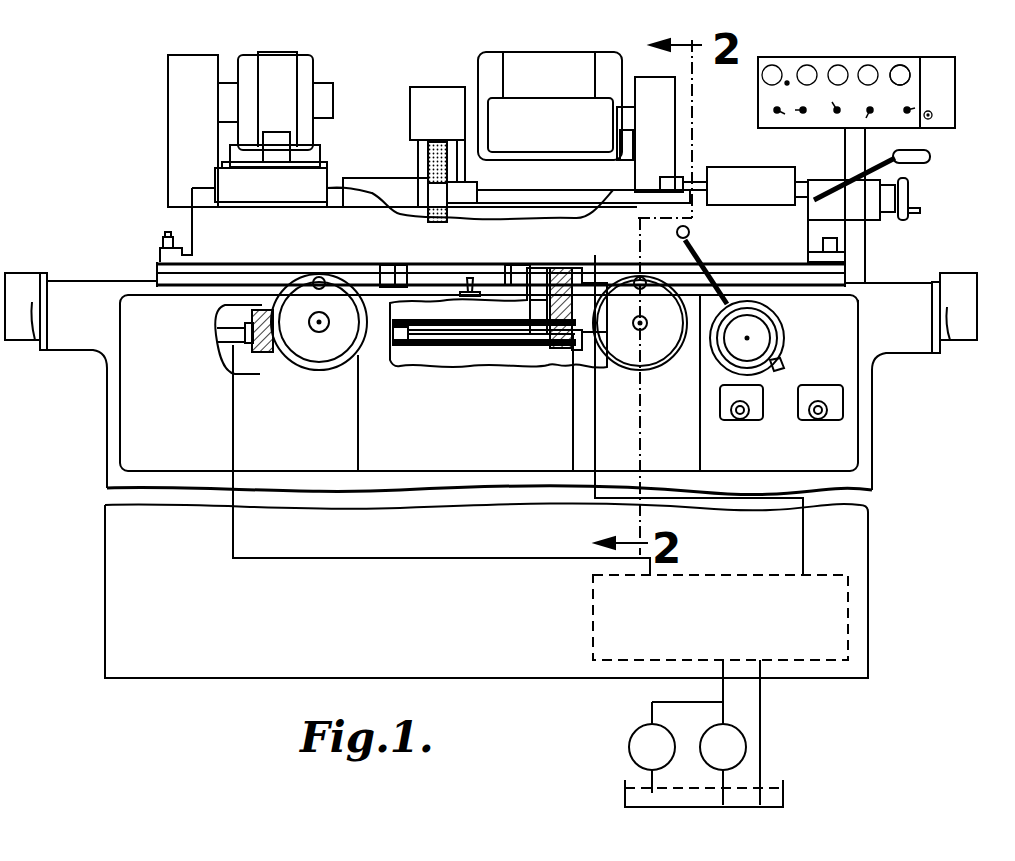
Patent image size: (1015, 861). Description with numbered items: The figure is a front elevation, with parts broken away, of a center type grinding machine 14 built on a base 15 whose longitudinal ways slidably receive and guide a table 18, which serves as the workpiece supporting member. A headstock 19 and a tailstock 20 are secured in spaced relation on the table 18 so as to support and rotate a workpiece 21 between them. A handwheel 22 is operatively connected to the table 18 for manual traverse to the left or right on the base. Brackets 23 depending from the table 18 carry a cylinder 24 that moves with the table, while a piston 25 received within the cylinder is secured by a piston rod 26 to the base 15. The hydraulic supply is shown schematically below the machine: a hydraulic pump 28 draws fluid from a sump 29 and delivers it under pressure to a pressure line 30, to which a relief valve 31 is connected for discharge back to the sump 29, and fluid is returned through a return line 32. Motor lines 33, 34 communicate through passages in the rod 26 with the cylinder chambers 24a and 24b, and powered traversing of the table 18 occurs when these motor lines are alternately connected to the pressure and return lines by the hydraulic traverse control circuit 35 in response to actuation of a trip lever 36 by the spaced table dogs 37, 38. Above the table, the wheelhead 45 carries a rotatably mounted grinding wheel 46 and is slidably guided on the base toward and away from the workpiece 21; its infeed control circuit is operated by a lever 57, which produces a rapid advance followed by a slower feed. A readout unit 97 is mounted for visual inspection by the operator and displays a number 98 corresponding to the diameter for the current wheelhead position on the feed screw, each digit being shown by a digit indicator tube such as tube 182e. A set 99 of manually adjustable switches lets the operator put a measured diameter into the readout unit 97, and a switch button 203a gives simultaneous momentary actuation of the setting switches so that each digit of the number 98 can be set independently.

The center type grinding machine 14 is at (104, 487).
The base 15 is at (872, 490).
The table 18 is at (155, 262).
The headstock 19 is at (330, 168).
The tailstock 20 is at (810, 180).
The workpiece 21 is at (483, 192).
The handwheel 22 is at (328, 366).
The brackets 23 is at (256, 354).
The cylinder 24 is at (418, 350).
The cylinder chamber 24a is at (272, 352).
The cylinder chamber 24b is at (505, 331).
The piston 25 is at (414, 330).
The piston rod 26 is at (478, 336).
The hydraulic pump 28 is at (748, 742).
The sump 29 is at (783, 790).
The pressure line 30 is at (722, 687).
The relief valve 31 is at (637, 726).
The return line 32 is at (760, 705).
The motor line 33 is at (305, 560).
The motor line 34 is at (596, 444).
The hydraulic traverse control circuit 35 is at (848, 578).
The trip lever 36 is at (470, 276).
The table dog 37 is at (527, 264).
The table dog 38 is at (390, 264).
The wheelhead 45 is at (643, 128).
The grinding wheel 46 is at (428, 150).
The lever 57 is at (700, 268).
The readout unit 97 is at (960, 80).
The number 98 is at (752, 76).
The set of manually adjustable switches 99 is at (752, 111).
The digit indicator tube 182e is at (906, 66).
The switch button 203a is at (933, 115).